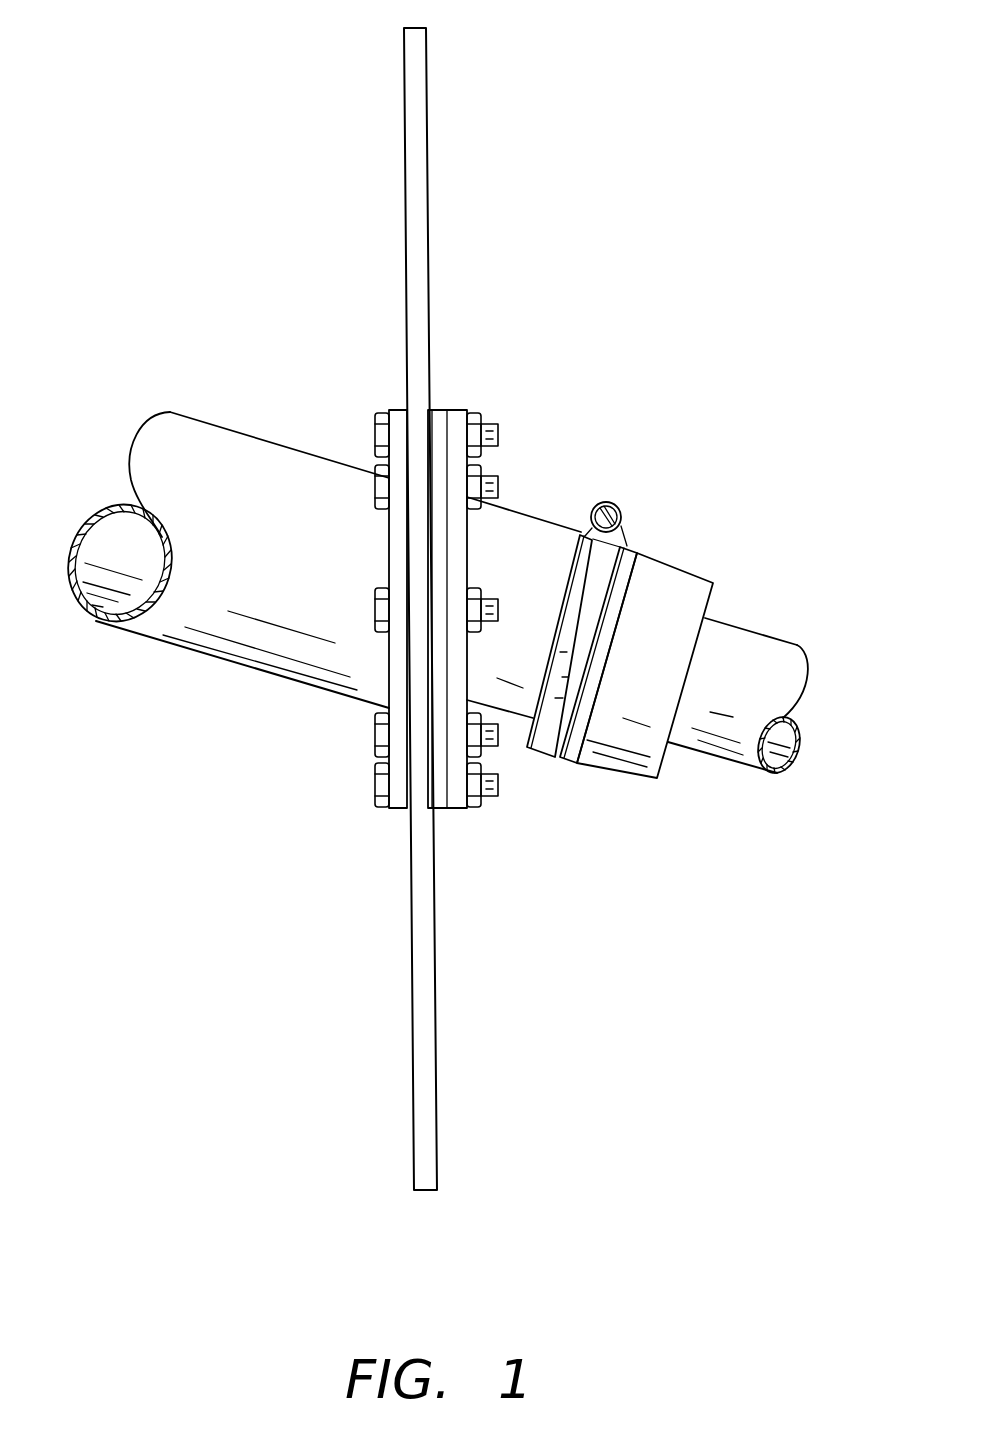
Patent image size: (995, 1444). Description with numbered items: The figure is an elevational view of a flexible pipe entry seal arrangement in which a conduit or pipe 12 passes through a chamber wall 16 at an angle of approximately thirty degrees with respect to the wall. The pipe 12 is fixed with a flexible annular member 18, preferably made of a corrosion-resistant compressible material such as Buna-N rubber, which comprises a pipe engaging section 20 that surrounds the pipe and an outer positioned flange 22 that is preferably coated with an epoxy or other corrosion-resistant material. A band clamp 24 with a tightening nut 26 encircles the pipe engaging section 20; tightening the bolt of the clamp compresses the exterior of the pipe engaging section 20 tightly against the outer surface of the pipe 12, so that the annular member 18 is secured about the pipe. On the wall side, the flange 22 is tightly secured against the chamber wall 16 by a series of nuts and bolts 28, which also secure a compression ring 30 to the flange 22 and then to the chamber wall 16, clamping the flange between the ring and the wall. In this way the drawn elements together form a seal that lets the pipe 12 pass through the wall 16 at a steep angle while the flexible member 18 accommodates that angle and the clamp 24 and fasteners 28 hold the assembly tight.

The pipe 12 is at (267, 639).
The chamber wall 16 is at (413, 70).
The flexible annular member 18 is at (587, 775).
The pipe engaging section 20 is at (525, 515).
The flange 22 is at (403, 812).
The band clamp 24 is at (600, 553).
The tightening nut 26 is at (607, 501).
The nuts and bolts 28 is at (492, 417).
The compression ring 30 is at (443, 812).